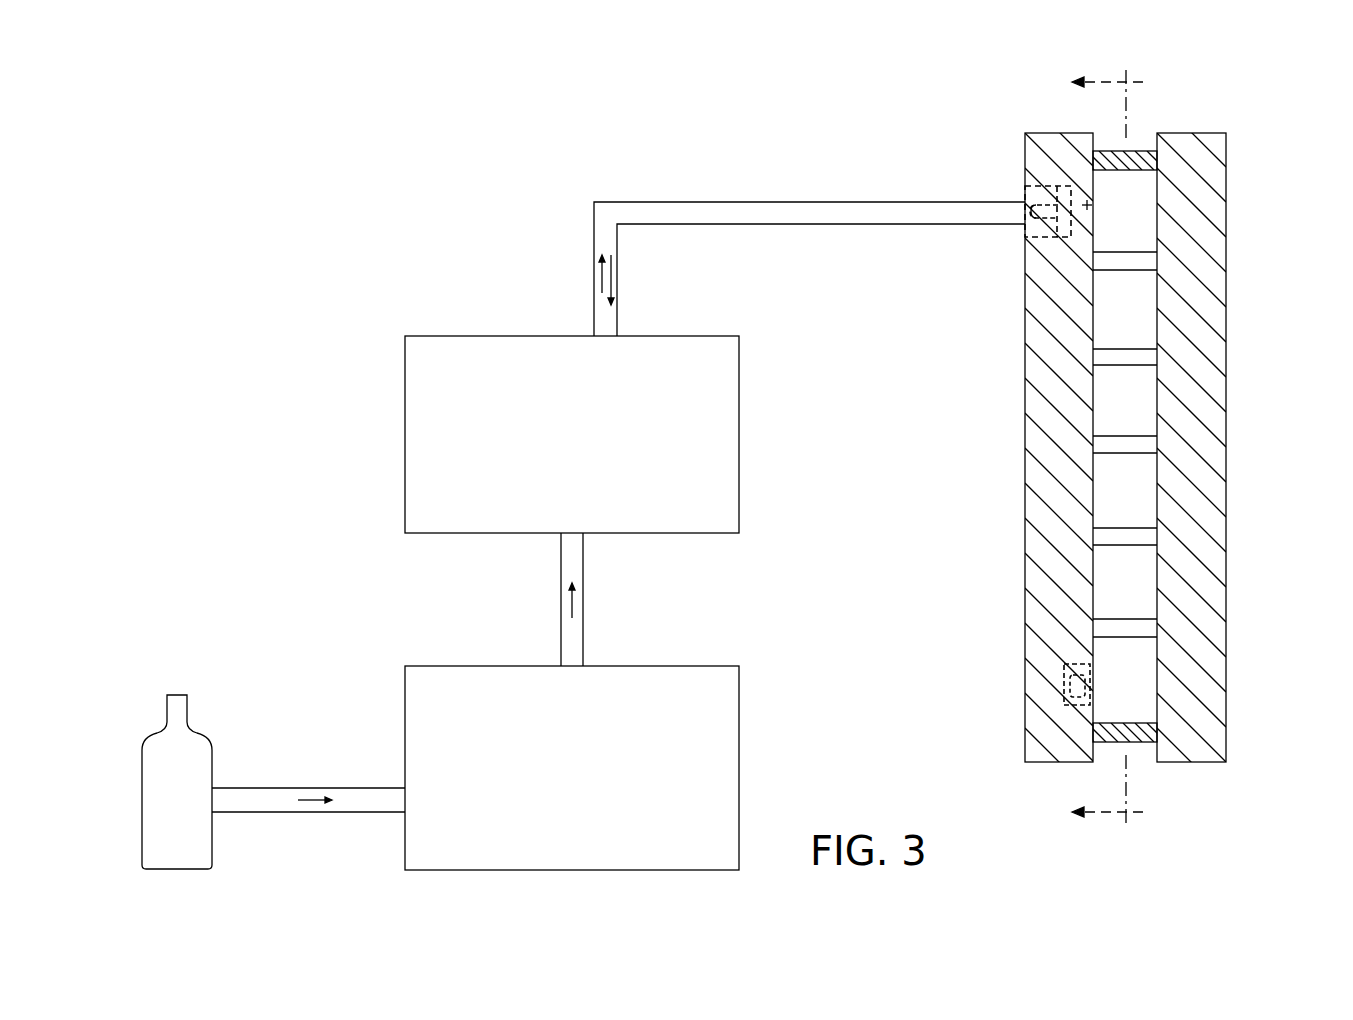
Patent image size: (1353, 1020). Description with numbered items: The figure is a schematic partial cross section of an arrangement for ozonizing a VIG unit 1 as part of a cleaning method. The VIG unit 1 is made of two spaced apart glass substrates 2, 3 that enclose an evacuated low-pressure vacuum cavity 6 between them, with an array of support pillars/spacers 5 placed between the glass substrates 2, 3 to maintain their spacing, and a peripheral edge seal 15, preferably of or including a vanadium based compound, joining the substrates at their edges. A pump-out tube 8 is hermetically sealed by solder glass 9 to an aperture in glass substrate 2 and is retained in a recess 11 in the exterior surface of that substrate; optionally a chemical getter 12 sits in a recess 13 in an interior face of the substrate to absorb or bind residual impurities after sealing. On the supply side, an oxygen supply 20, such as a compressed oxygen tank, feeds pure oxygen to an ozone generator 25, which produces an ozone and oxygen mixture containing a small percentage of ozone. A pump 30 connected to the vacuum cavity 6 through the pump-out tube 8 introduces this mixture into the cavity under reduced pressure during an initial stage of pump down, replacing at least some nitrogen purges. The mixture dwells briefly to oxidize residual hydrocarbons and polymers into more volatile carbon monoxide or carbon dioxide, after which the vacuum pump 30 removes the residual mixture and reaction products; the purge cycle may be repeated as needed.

The VIG unit 1 is at (1143, 447).
The glass substrate 2 is at (1025, 497).
The glass substrate 3 is at (1197, 378).
The support pillars/spacers 5 is at (1132, 447).
The vacuum cavity 6 is at (1112, 569).
The pump-out tube 8 is at (1087, 205).
The solder glass 9 is at (1058, 198).
The recess 11 is at (1042, 236).
The chemical getter 12 is at (1077, 683).
The recess 13 is at (1072, 708).
The peripheral edge seal 15 is at (1138, 158).
The oxygen supply 20 is at (197, 730).
The ozone generator 25 is at (688, 666).
The vacuum pump 30 is at (487, 336).